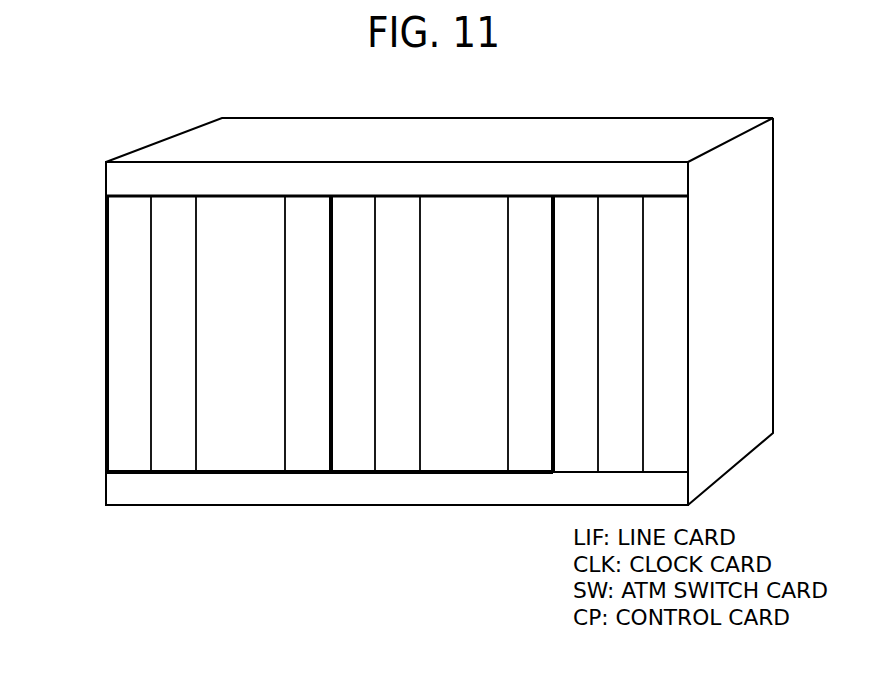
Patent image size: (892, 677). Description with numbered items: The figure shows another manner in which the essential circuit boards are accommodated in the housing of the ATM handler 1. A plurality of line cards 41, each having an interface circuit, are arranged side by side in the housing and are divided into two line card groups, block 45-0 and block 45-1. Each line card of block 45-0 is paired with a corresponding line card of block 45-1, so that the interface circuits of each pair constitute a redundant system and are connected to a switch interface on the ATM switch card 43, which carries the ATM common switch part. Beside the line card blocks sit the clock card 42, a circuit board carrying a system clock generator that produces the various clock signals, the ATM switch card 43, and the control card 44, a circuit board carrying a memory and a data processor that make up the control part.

The ATM handler 1 is at (502, 128).
The line card 41 is at (106, 435).
The clock card 42 is at (575, 334).
The ATM switch card 43 is at (620, 334).
The control card 44 is at (665, 334).
The block 45-0 is at (230, 474).
The block 45-1 is at (450, 474).